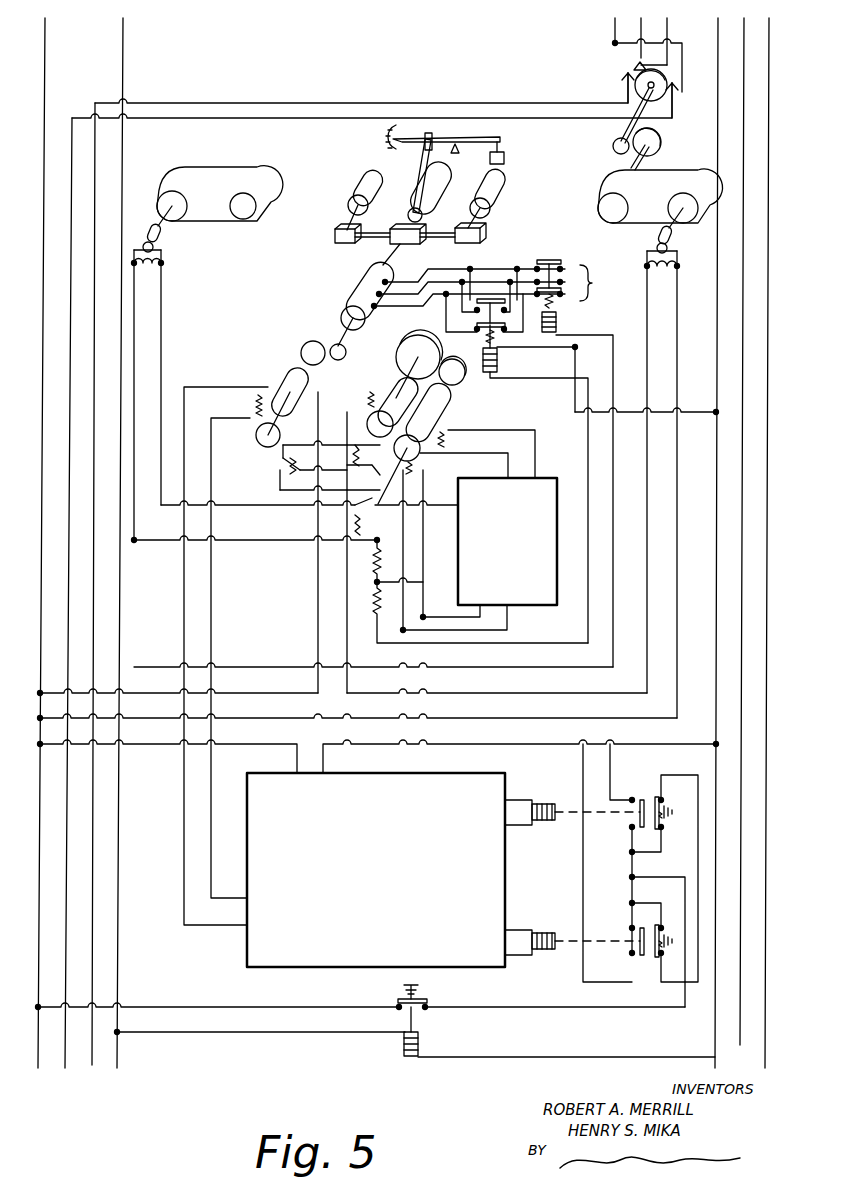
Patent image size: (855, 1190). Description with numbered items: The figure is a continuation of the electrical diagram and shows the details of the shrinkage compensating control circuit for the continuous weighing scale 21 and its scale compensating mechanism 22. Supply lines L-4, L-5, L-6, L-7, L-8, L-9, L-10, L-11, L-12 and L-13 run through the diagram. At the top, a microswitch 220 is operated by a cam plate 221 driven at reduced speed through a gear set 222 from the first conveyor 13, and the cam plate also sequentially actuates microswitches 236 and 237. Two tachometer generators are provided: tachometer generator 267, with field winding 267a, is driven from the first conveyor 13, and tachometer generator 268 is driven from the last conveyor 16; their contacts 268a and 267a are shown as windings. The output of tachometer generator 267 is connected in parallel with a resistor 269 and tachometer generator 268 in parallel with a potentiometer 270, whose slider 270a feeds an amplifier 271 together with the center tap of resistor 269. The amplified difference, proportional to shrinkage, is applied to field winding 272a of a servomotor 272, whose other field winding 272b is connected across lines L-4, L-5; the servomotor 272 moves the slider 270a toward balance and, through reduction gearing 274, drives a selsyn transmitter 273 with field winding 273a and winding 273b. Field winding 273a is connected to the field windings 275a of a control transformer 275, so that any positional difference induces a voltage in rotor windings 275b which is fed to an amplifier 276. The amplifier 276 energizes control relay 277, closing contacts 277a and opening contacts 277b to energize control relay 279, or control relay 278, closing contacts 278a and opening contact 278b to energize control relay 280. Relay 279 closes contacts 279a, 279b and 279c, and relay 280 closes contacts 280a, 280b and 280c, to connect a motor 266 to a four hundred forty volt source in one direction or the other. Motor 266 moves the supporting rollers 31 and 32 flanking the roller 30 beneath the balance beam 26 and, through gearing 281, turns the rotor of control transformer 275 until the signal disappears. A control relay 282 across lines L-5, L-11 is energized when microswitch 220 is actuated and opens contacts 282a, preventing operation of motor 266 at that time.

The conveyor 13 is at (672, 175).
The conveyor 16 is at (216, 172).
The continuous weighing scale 21 is at (405, 153).
The scale compensating mechanism 22 is at (412, 241).
The balance beam 26 is at (480, 142).
The roller 30 is at (427, 185).
The supporting roller 31 is at (492, 193).
The supporting roller 32 is at (360, 192).
The microswitch 220 is at (633, 67).
The cam plate 221 is at (660, 86).
The gear set 222 is at (612, 145).
The microswitch 236 is at (627, 78).
The microswitch 237 is at (675, 95).
The motor 266 is at (365, 283).
The tachometer generator 267 is at (668, 247).
The field winding 267a is at (664, 268).
The tachometer generator 268 is at (158, 241).
The coil 268a is at (150, 266).
The resistor 269 is at (370, 580).
The potentiometer 270 is at (352, 520).
The slider 270a is at (352, 503).
The amplifier 271 is at (479, 555).
The servomotor 272 is at (442, 420).
The field winding 272a is at (446, 438).
The field winding 272b is at (426, 468).
The selsyn transmitter 273 is at (394, 382).
The field winding 273a is at (362, 440).
The contact 273b is at (374, 402).
The reduction gearing 274 is at (421, 343).
The control transformer 275 is at (288, 370).
The field windings 275a is at (277, 460).
The rotor windings 275b is at (258, 395).
The amplifier 276 is at (376, 870).
The control relay 277 is at (546, 932).
The contacts 277a is at (640, 940).
The contacts 277b is at (654, 958).
The control relay 278 is at (548, 803).
The contacts 278a is at (640, 816).
The contact 278b is at (656, 800).
The control relay 279 is at (494, 370).
The contacts 279a is at (500, 342).
The contacts 279b is at (494, 320).
The contacts 279c is at (492, 298).
The control relay 280 is at (562, 318).
The contacts 280a is at (562, 296).
The contacts 280b is at (562, 280).
The contacts 280c is at (556, 262).
The gearing 281 is at (312, 343).
The control relay 282 is at (422, 1052).
The contacts 282a is at (430, 1005).
The 110 volt line L-4 is at (40, 543).
The 110 volt line L-5 is at (717, 552).
The supply line L-6 is at (616, 28).
The supply line L-7 is at (641, 38).
The supply line L-8 is at (666, 38).
The supply line L-9 is at (743, 536).
The supply line L-10 is at (772, 552).
The line L-11 is at (123, 552).
The supply line L-12 is at (200, 103).
The supply line L-13 is at (300, 118).